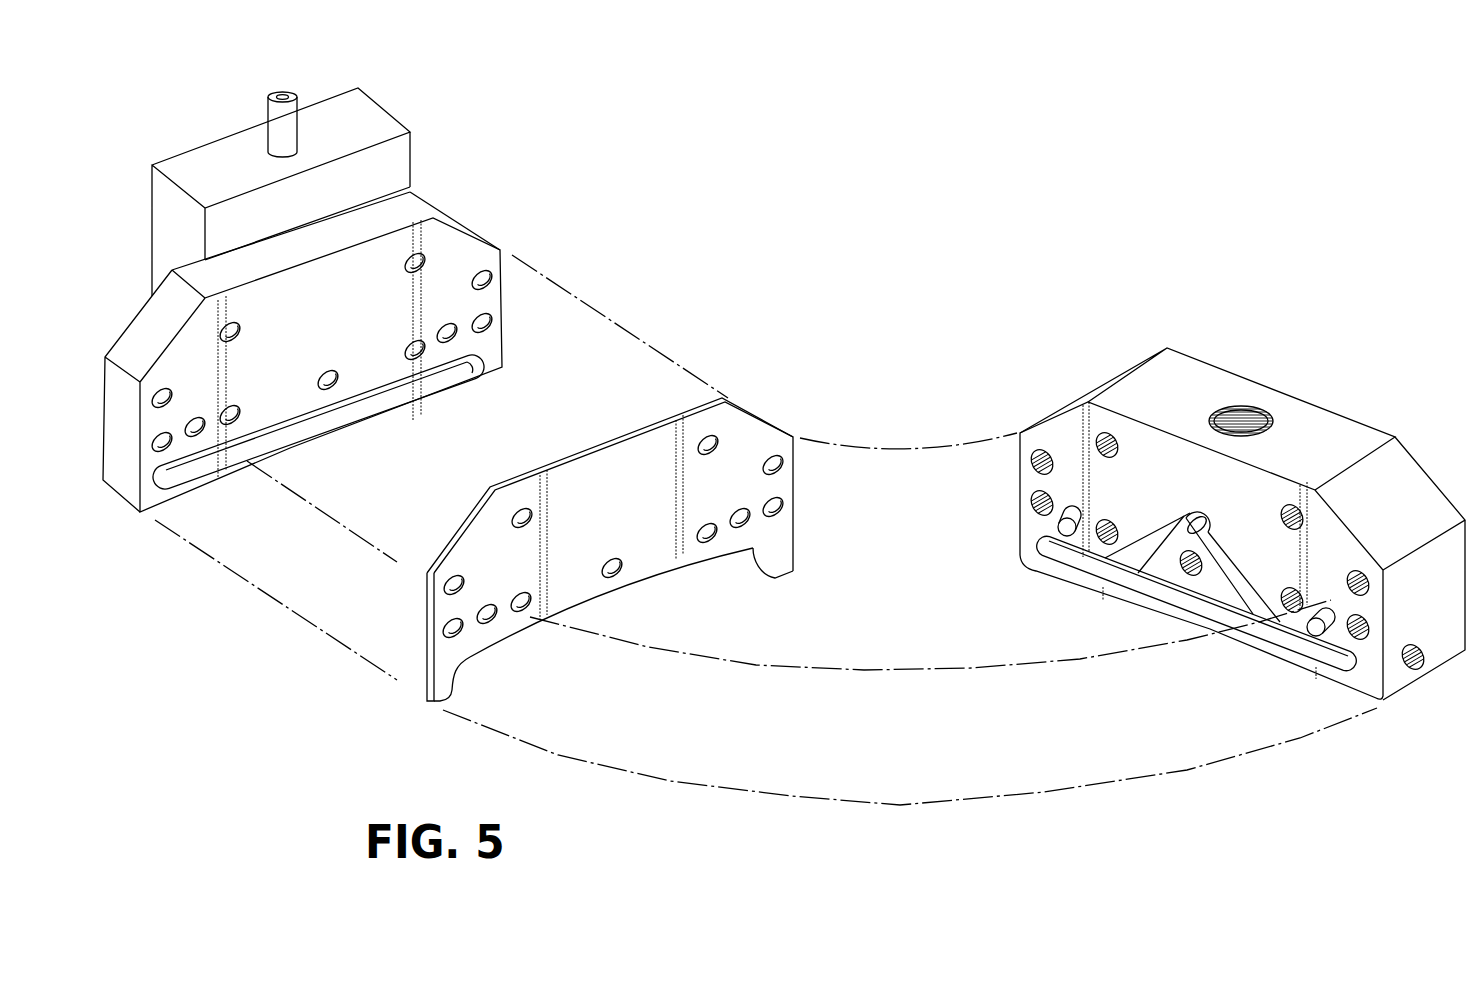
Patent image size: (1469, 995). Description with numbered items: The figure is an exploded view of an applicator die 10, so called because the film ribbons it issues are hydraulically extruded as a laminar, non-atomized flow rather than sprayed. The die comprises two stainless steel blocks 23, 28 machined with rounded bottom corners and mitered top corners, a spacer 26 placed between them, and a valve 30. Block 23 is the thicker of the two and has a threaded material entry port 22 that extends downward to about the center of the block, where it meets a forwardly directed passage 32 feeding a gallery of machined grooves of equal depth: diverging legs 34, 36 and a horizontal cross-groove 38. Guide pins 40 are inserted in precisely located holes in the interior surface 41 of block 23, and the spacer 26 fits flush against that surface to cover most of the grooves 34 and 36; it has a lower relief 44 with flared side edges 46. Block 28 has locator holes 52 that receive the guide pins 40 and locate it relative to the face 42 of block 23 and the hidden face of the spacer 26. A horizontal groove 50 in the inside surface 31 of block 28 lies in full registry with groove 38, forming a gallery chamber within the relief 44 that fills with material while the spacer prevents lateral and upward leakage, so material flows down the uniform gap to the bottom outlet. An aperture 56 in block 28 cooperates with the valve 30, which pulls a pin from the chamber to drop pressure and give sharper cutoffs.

The applicator die 10 is at (897, 229).
The threaded material entry port 22 is at (1242, 415).
The block 23 is at (1347, 440).
The spacer 26 is at (780, 528).
The block 28 is at (463, 222).
The valve 30 is at (370, 112).
The inside surface 31 is at (313, 280).
The forwardly directed passage 32 is at (1185, 510).
The diverging leg 34 is at (1147, 540).
The diverging leg 36 is at (1247, 578).
The horizontal cross-groove 38 is at (1250, 616).
The guide pins 40 is at (1042, 540).
The interior surface 41 is at (1242, 497).
The face 42 is at (488, 604).
The relief 44 is at (600, 597).
The flared side edges 46 is at (757, 577).
The horizontal groove 50 is at (432, 373).
The locator holes 52 is at (450, 333).
The aperture 56 is at (338, 380).